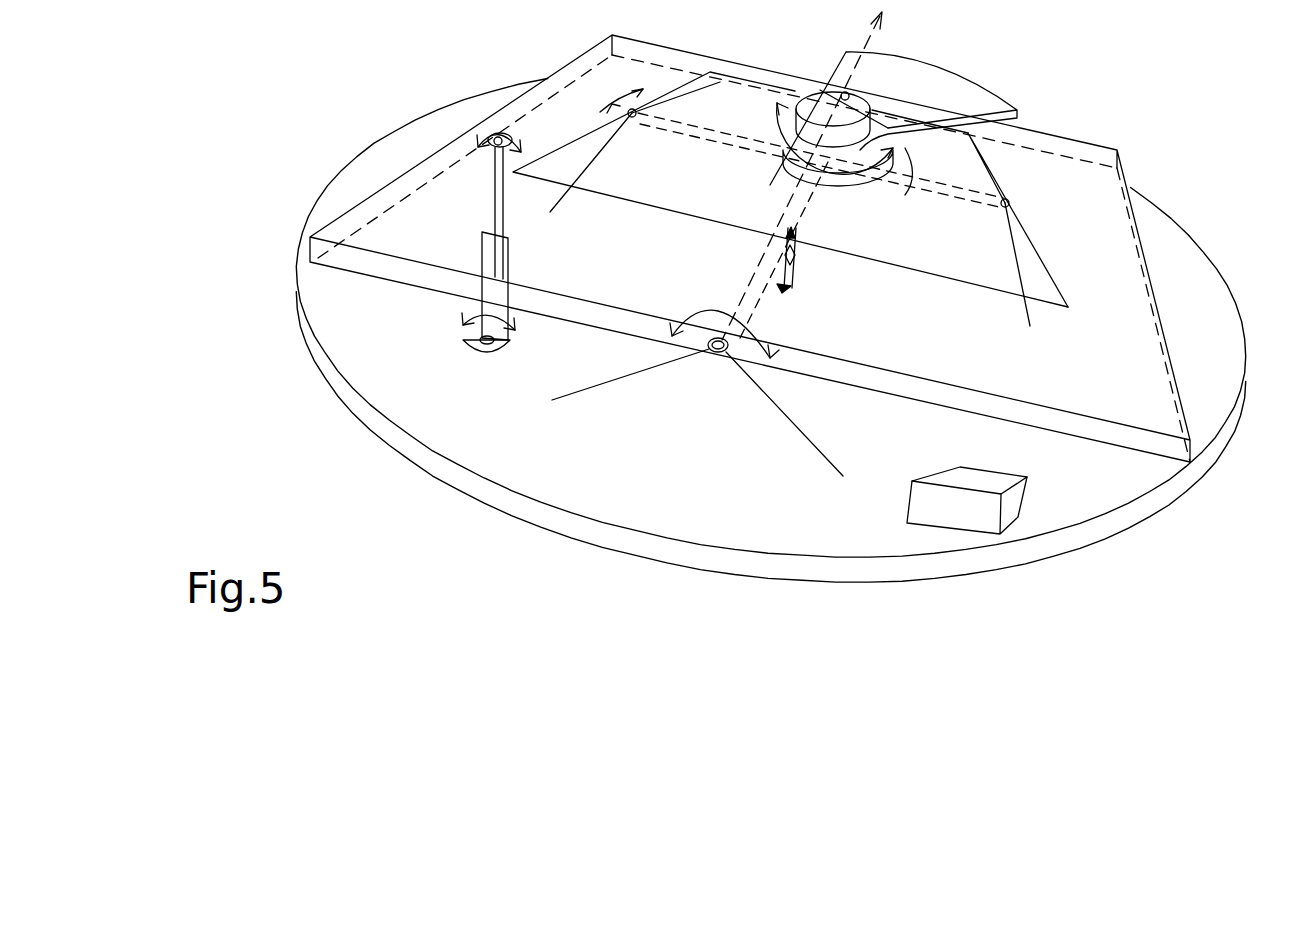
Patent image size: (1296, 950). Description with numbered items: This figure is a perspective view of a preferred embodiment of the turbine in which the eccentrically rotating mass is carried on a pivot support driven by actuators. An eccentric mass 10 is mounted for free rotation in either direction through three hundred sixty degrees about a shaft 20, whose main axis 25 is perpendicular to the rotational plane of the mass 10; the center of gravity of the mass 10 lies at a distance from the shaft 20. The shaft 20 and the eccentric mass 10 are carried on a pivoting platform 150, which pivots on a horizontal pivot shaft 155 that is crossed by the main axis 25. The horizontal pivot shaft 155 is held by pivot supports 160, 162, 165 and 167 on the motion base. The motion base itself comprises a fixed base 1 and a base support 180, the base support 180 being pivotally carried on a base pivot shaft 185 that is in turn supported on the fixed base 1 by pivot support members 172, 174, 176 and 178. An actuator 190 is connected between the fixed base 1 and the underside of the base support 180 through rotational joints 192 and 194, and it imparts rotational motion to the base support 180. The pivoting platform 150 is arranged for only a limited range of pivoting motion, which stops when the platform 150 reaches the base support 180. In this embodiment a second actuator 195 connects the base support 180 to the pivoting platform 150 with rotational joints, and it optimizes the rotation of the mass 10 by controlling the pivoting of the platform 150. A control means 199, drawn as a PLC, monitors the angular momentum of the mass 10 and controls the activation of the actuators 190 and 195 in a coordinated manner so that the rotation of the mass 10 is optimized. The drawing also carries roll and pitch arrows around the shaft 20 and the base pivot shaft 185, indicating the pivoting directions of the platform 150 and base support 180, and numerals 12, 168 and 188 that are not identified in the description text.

The fixed base 1 is at (1158, 500).
The eccentric mass 10 is at (958, 100).
The hub flange 12 is at (858, 158).
The shaft 20 is at (828, 105).
The main axis 25 is at (868, 42).
The pivoting platform 150 is at (1040, 262).
The horizontal pivot shaft 155 is at (962, 190).
The pivot support 160 is at (1010, 228).
The pivot support 162 is at (968, 165).
The pivot support 165 is at (590, 172).
The pivot support 167 is at (706, 78).
The roll rotation arrow 168 is at (608, 108).
The pivot support member 172 is at (578, 390).
The pivot support member 174 is at (835, 462).
The pivot support member 176 is at (777, 106).
The pivot support member 178 is at (905, 152).
The base support 180 is at (1108, 412).
The base pivot shaft 185 is at (758, 290).
The pitch rotation arrow 188 is at (683, 310).
The actuator 190 is at (482, 236).
The rotational joint 192 is at (468, 318).
The rotational joint 194 is at (486, 160).
The actuator 195 is at (793, 257).
The control means 199 is at (953, 478).